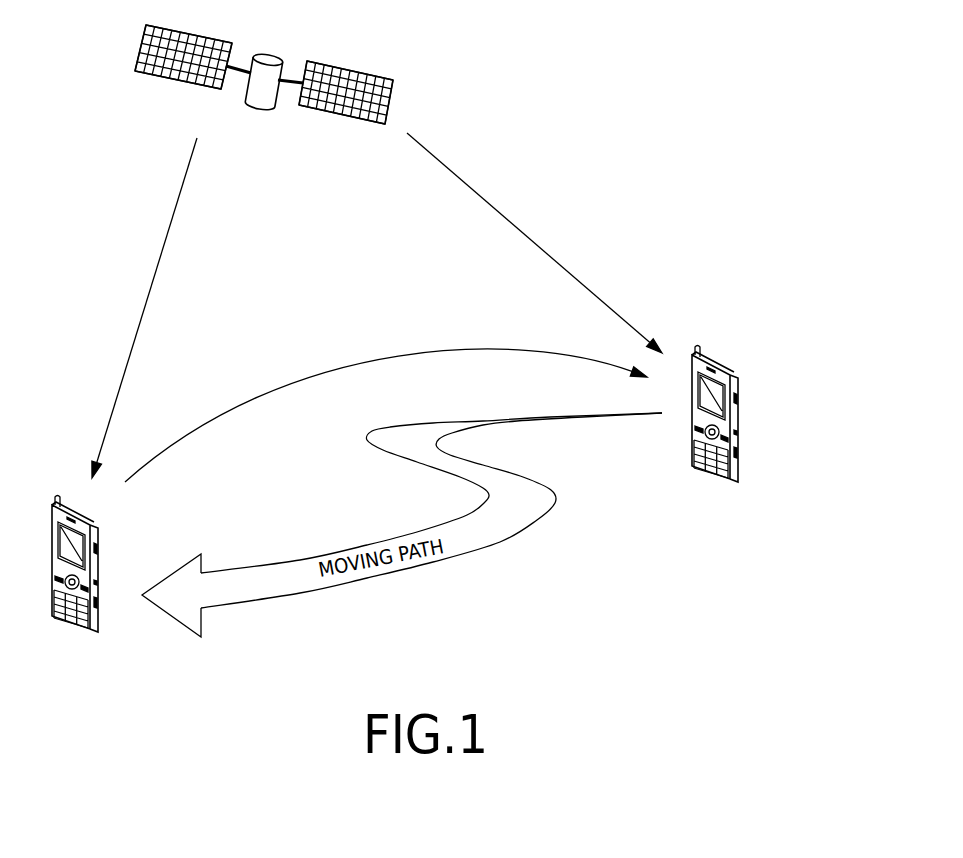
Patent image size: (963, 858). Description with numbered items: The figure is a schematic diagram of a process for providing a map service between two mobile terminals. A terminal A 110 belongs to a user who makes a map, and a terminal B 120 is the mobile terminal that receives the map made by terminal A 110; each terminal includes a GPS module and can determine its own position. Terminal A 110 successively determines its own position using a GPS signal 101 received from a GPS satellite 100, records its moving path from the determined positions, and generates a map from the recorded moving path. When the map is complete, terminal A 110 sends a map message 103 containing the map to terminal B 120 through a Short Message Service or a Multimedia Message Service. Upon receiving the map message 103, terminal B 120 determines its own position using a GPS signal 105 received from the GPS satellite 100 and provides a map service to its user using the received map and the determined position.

The GPS satellite 100 is at (268, 54).
The GPS signal 101 is at (177, 198).
The map message 103 is at (438, 352).
The GPS signal 105 is at (477, 193).
The terminal A 110 is at (100, 557).
The terminal B 120 is at (722, 360).